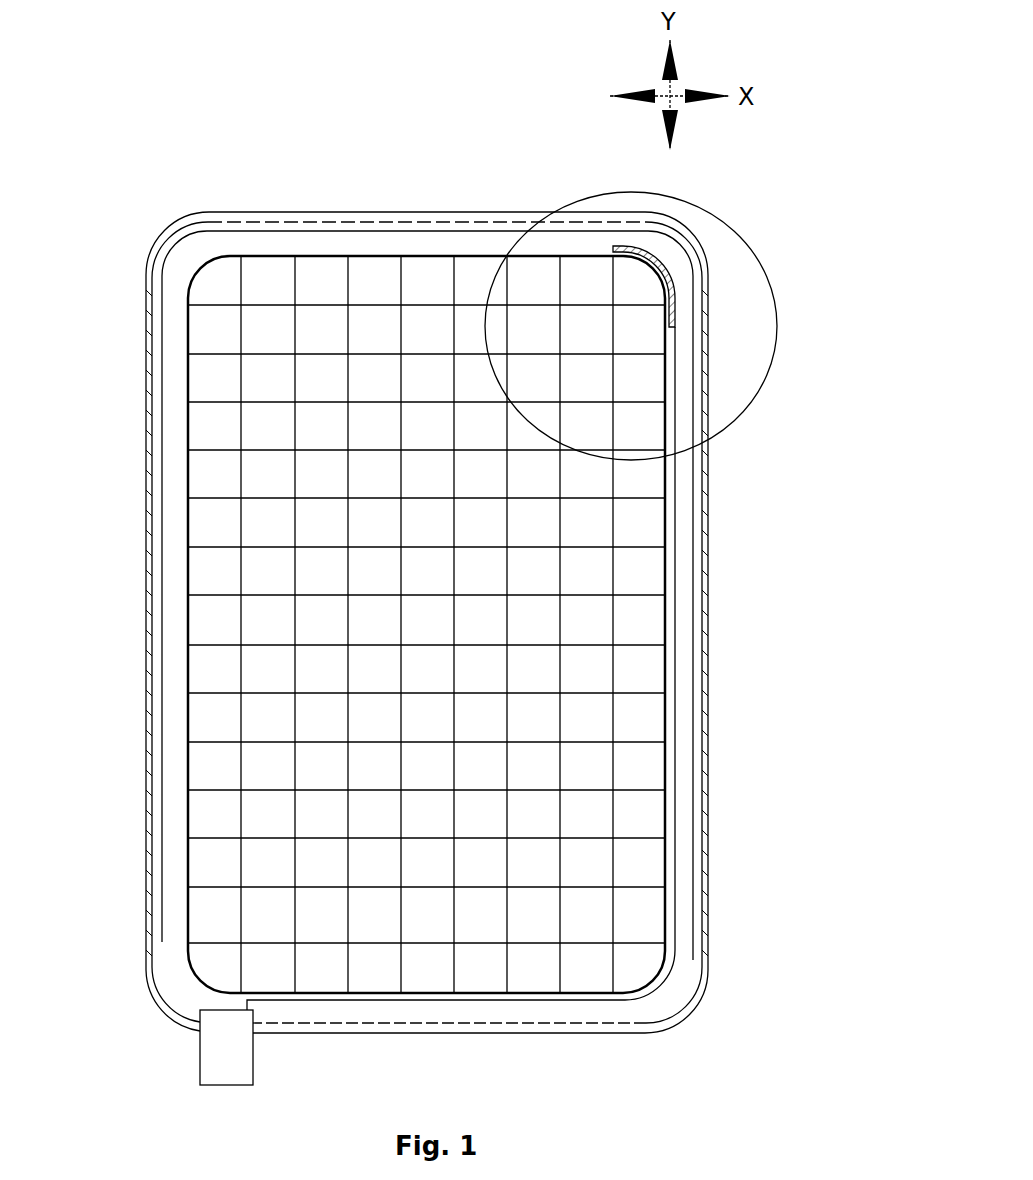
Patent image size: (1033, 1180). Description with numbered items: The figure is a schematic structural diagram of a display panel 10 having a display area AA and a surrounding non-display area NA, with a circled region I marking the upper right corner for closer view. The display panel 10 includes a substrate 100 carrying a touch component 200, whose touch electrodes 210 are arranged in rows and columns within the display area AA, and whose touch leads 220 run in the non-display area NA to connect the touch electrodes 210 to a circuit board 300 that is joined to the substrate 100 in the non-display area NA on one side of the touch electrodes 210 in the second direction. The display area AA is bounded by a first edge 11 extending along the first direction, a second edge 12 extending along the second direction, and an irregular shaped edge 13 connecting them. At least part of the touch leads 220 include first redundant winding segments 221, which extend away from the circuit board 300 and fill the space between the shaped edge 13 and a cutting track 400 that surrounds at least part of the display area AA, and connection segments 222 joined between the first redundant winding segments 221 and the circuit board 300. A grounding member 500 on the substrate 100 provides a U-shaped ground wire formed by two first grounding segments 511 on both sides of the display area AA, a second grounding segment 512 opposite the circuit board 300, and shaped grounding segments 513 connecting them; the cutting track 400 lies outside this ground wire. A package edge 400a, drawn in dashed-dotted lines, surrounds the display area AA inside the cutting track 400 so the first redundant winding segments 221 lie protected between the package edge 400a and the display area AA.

The display panel 10 is at (466, 107).
The first edge 11 is at (188, 430).
The second edge 12 is at (478, 252).
The shaped edge 13 is at (200, 268).
The substrate 100 is at (178, 532).
The touch component 200 is at (427, 540).
The touch electrodes 210 is at (650, 525).
The touch leads 220 is at (477, 540).
The first redundant winding segments 221 is at (677, 305).
The connection segments 222 is at (677, 623).
The circuit board 300 is at (213, 1053).
The cutting track 400 is at (160, 376).
The package edge 400a is at (147, 315).
The grounding member 500 is at (693, 433).
The first grounding segments 511 is at (160, 626).
The second grounding segment 512 is at (493, 230).
The shaped grounding segment 513 is at (165, 270).
The display area AA is at (318, 268).
The non-display area NA is at (398, 240).
The enlarged region I is at (778, 362).